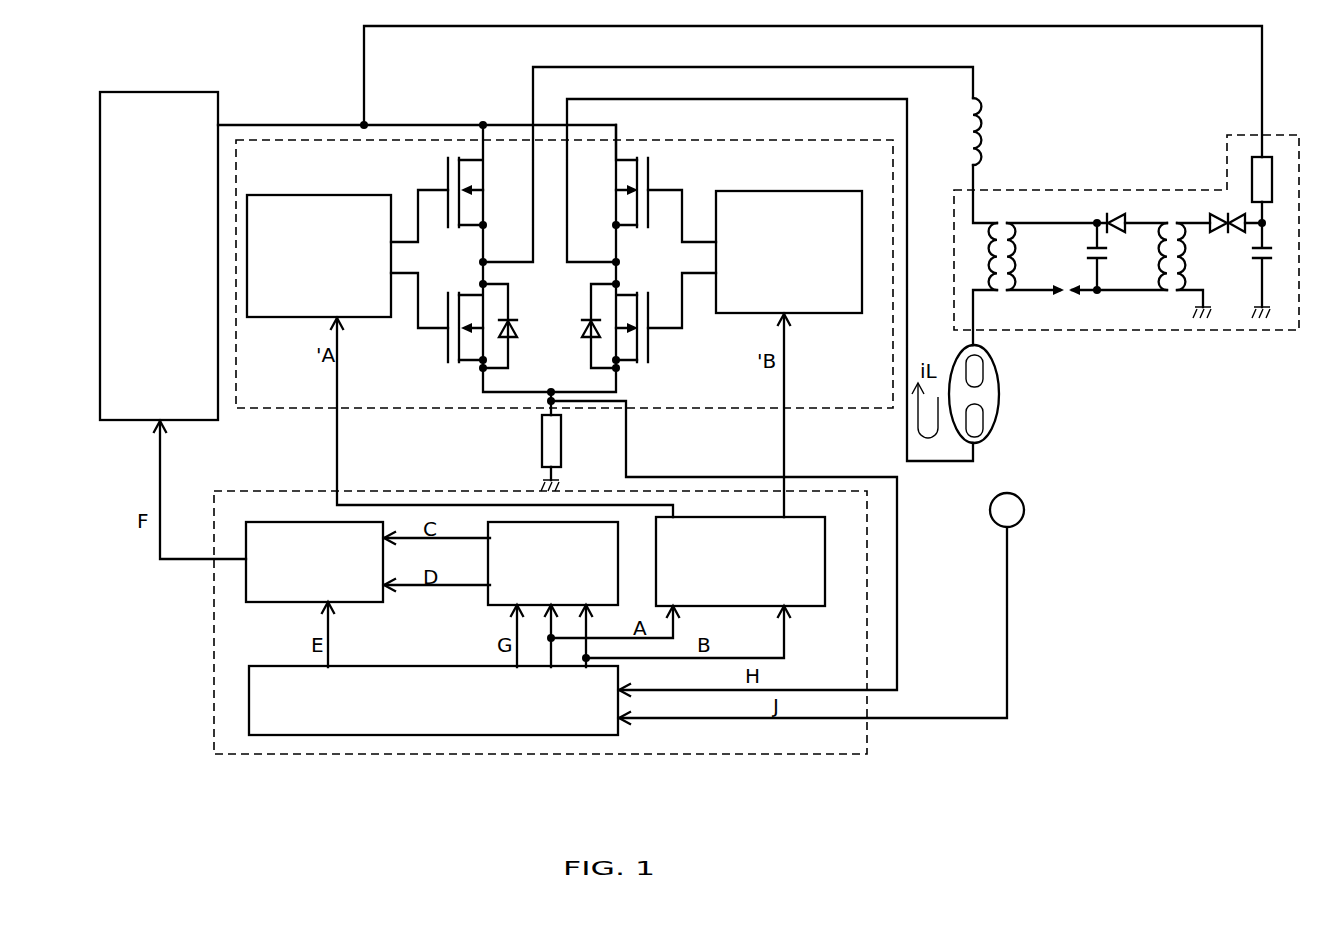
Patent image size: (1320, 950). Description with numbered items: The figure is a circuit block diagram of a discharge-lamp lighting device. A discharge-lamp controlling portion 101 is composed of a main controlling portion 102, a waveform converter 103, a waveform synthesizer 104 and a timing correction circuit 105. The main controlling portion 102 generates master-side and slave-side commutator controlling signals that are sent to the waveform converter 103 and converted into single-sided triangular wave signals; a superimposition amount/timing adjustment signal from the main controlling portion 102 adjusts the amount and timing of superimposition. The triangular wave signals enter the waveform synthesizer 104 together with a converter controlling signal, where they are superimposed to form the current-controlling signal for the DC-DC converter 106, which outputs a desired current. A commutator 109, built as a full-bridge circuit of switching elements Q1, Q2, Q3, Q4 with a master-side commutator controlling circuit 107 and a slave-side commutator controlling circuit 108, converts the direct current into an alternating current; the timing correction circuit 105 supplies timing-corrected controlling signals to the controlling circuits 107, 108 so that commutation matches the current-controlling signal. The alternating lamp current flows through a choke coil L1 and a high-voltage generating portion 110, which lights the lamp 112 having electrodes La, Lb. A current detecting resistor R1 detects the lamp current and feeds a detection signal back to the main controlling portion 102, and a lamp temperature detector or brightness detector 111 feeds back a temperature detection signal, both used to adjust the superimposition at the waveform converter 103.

The discharge-lamp controlling portion 101 is at (869, 742).
The main controlling portion 102 is at (560, 736).
The waveform converter 103 is at (497, 520).
The waveform synthesizer 104 is at (358, 604).
The timing correction circuit 105 is at (720, 516).
The DC-DC converter 106 is at (142, 92).
The master-side commutator controlling circuit 107 is at (302, 196).
The slave-side commutator controlling circuit 108 is at (782, 192).
The commutator 109 is at (320, 140).
The high-voltage generating portion 110 is at (1137, 331).
The lamp temperature detector or brightness detector 111 is at (1024, 510).
The lamp 112 is at (1010, 394).
The switching element Q1 is at (448, 168).
The switching element Q2 is at (648, 168).
The switching element Q3 is at (448, 353).
The switching element Q4 is at (648, 353).
The current detecting resistor R1 is at (566, 441).
The choke coil L1 is at (1001, 131).
The electrode La is at (992, 372).
The electrode Lb is at (990, 422).